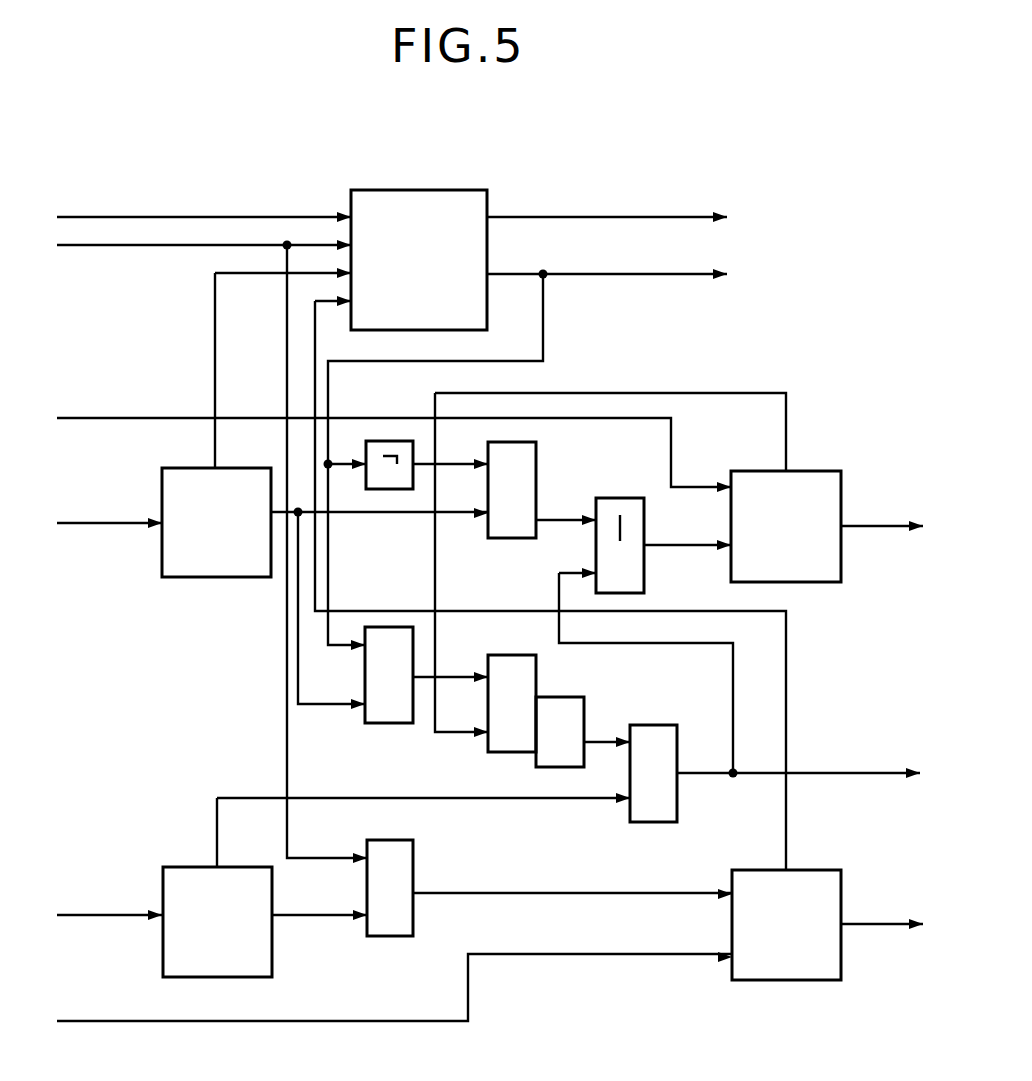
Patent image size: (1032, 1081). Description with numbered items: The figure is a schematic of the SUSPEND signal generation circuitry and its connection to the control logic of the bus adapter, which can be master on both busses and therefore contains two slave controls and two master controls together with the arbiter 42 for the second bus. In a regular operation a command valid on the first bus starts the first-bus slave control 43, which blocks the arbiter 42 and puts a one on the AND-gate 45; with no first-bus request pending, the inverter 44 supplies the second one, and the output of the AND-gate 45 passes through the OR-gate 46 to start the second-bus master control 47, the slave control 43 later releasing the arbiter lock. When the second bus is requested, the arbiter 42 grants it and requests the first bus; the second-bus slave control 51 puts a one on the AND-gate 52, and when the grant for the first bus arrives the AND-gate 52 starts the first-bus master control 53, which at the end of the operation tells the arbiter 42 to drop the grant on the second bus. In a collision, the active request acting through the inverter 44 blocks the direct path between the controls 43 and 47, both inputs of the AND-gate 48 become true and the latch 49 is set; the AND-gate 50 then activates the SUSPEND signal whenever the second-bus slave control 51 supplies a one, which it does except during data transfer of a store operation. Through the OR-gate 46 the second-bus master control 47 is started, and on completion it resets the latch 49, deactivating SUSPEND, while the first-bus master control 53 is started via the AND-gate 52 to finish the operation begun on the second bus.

The arbiter 42 is at (415, 190).
The bus-1 slave control 43 is at (193, 468).
The inverter 44 is at (373, 489).
The AND-gate 45 is at (536, 467).
The OR-gate 46 is at (644, 530).
The bus-2 master control 47 is at (841, 471).
The AND-gate 48 is at (386, 723).
The latch 49 is at (537, 683).
The AND-gate 50 is at (652, 822).
The bus-2 slave control 51 is at (193, 867).
The AND-gate 52 is at (413, 845).
The bus-1 master control 53 is at (841, 880).